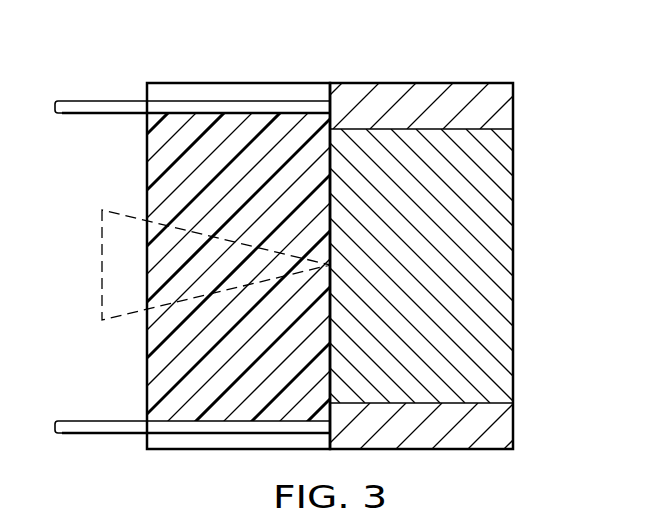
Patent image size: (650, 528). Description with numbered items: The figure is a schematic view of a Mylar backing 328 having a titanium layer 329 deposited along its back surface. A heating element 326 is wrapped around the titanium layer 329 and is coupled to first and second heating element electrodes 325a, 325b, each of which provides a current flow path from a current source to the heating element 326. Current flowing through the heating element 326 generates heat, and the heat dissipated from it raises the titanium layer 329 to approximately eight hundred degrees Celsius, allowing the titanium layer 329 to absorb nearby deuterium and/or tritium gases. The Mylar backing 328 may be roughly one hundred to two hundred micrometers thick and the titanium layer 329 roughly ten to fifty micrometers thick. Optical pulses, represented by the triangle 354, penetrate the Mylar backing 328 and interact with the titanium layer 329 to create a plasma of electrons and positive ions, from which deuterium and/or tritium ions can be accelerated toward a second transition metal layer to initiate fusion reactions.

The first heating element electrode 325a is at (100, 100).
The second heating element electrode 325b is at (98, 435).
The Mylar backing 328 is at (187, 440).
The triangle 354 is at (100, 265).
The titanium layer 329 is at (512, 259).
The heating element 326 is at (455, 438).